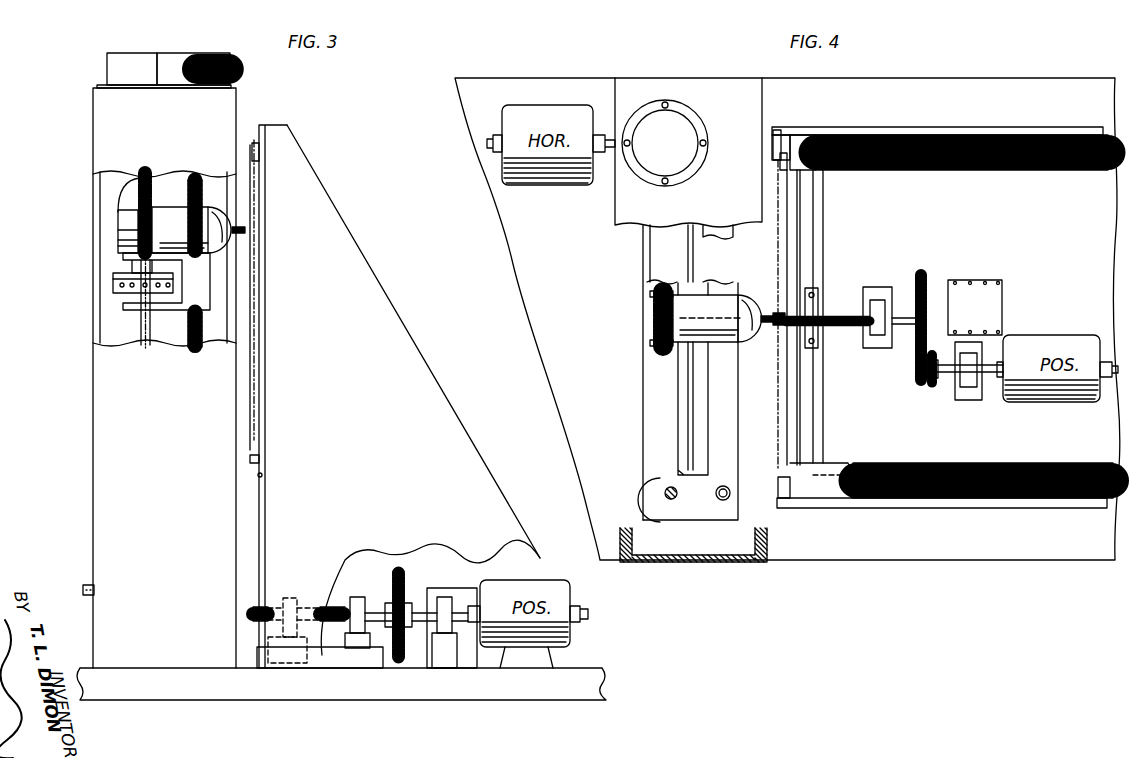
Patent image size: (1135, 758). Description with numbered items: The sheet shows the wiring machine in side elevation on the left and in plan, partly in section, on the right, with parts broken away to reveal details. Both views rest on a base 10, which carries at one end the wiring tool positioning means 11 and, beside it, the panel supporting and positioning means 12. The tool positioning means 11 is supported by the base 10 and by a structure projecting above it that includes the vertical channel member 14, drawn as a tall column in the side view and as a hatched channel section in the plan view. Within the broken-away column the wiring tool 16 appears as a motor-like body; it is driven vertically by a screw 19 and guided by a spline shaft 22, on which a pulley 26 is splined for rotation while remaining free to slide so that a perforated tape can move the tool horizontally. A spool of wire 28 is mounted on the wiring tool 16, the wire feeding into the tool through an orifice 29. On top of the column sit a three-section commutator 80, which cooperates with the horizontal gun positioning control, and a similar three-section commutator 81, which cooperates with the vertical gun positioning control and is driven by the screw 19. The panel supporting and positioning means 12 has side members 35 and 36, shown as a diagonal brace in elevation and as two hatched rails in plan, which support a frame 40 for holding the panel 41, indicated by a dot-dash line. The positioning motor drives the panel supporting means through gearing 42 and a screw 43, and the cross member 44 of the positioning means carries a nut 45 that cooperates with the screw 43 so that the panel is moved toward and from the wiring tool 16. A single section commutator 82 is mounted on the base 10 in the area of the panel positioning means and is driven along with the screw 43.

In FIG. 3, the base 10 is at (410, 692).
In FIG. 4, the base 10 is at (895, 562).
In FIG. 3, the wiring tool positioning means 11 is at (183, 444).
In FIG. 4, the wiring tool positioning means 11 is at (632, 399).
In FIG. 3, the panel supporting and positioning means 12 is at (388, 251).
In FIG. 4, the panel supporting and positioning means 12 is at (997, 544).
In FIG. 3, the vertical channel member 14 is at (107, 484).
In FIG. 4, the vertical channel member 14 is at (688, 563).
In FIG. 3, the wiring tool 16 is at (223, 222).
In FIG. 4, the wiring tool 16 is at (746, 302).
In FIG. 3, the screw 19 is at (203, 328).
In FIG. 4, the screw 19 is at (731, 496).
In FIG. 3, the spline shaft 22 is at (137, 321).
In FIG. 4, the spline shaft 22 is at (677, 497).
In FIG. 3, the pulley 26 is at (113, 276).
In FIG. 4, the pulley 26 is at (643, 490).
In FIG. 3, the spool of wire 28 is at (131, 176).
In FIG. 4, the spool of wire 28 is at (675, 306).
In FIG. 3, the orifice 29 is at (115, 220).
In FIG. 3, the side member 35 is at (405, 357).
In FIG. 4, the side member 35 is at (843, 490).
In FIG. 4, the side member 36 is at (807, 142).
In FIG. 3, the frame 40 is at (260, 477).
In FIG. 4, the frame 40 is at (790, 423).
In FIG. 3, the panel 41 is at (257, 447).
In FIG. 4, the panel 41 is at (780, 396).
In FIG. 3, the gearing 42 is at (405, 598).
In FIG. 4, the gearing 42 is at (917, 365).
In FIG. 3, the screw 43 is at (332, 604).
In FIG. 4, the screw 43 is at (835, 312).
In FIG. 3, the cross member 44 is at (280, 640).
In FIG. 4, the cross member 44 is at (823, 208).
In FIG. 3, the nut 45 is at (290, 598).
In FIG. 4, the nut 45 is at (815, 330).
In FIG. 3, the three-section commutator 80 is at (135, 53).
In FIG. 4, the three-section commutator 80 is at (680, 125).
In FIG. 3, the three-section commutator 81 is at (192, 53).
In FIG. 3, the single section commutator 82 is at (453, 592).
In FIG. 4, the single section commutator 82 is at (978, 282).